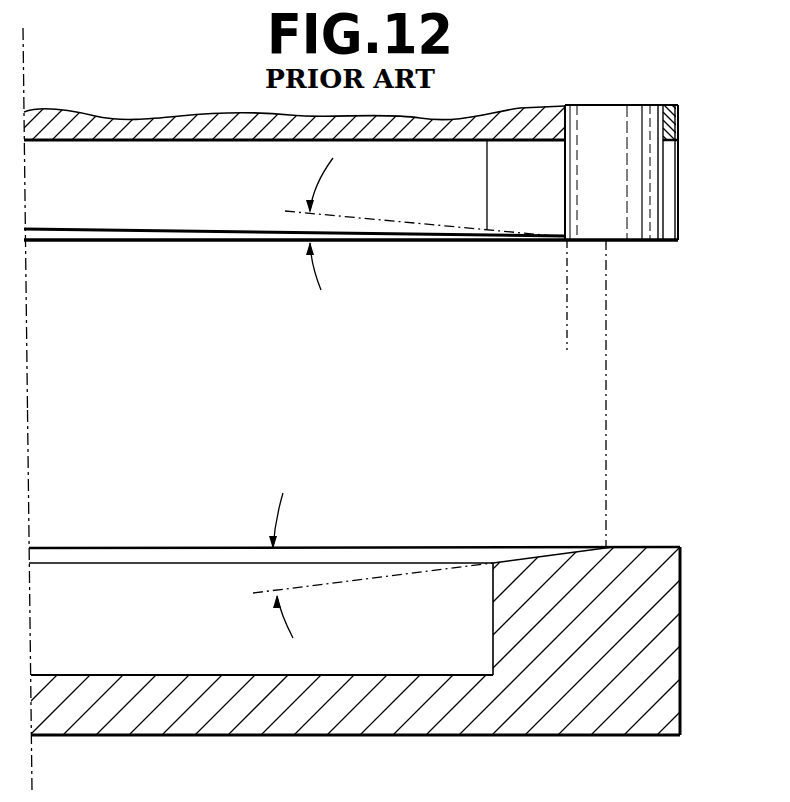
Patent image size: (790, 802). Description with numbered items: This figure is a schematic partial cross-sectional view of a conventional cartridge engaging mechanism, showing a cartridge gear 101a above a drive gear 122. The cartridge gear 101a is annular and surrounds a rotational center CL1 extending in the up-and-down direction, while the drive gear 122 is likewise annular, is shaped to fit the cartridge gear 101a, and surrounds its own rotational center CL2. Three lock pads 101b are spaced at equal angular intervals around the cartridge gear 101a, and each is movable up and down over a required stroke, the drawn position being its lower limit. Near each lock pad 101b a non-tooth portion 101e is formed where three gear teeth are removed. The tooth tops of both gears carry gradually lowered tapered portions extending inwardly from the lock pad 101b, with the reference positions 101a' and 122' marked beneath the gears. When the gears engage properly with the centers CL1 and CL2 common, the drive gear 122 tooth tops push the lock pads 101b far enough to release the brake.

The cartridge gear 101a is at (339, 158).
The lock pad 101b is at (593, 128).
The non-tooth portion 101e is at (692, 158).
The end position of cylindrical portion 101a' is at (458, 295).
The end position of holder body 122' is at (497, 393).
The drive gear 122 is at (395, 662).
The rotational center of cartridge gear CL1 is at (24, 36).
The rotational center of drive gear CL2 is at (33, 775).